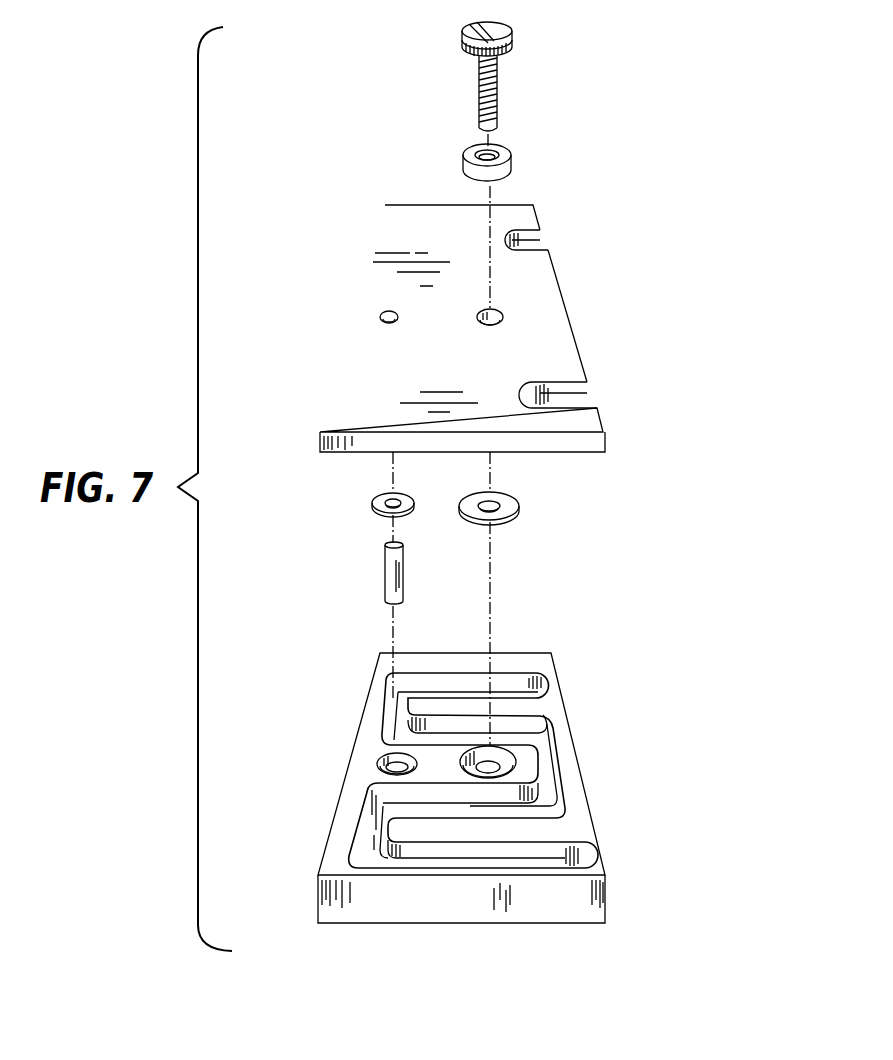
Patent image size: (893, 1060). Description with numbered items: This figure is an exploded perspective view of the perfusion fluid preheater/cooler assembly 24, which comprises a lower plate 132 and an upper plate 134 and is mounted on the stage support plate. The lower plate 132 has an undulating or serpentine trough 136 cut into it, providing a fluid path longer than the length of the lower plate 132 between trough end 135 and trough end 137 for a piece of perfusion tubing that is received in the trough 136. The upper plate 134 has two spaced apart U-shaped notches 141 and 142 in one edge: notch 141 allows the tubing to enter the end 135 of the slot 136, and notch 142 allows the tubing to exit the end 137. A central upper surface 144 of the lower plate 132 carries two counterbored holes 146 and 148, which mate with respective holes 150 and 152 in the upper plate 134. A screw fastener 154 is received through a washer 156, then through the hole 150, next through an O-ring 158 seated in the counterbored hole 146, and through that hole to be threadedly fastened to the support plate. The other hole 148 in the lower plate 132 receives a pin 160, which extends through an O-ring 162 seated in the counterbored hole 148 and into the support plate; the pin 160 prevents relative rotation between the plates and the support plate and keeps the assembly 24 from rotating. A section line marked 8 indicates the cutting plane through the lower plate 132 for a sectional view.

The section line 8- 8 is at (487, 612).
The perfusion fluid preheater/cooler assembly 24 is at (660, 497).
The lower plate 132 is at (577, 828).
The upper plate 134 is at (575, 343).
The trough end 135 is at (557, 865).
The undulating trough 136 is at (558, 797).
The trough end 137 is at (522, 672).
The U-shaped notch 141 is at (588, 401).
The U-shaped notch 142 is at (548, 243).
The central upper surface 144 is at (460, 768).
The counterbored hole 146 is at (497, 748).
The counterbored hole 148 is at (391, 755).
The hole 150 is at (497, 310).
The hole 152 is at (390, 312).
The screw fastener 154 is at (498, 86).
The washer 156 is at (506, 169).
The O-ring 158 is at (516, 512).
The pin 160 is at (385, 578).
The O-ring 162 is at (373, 502).